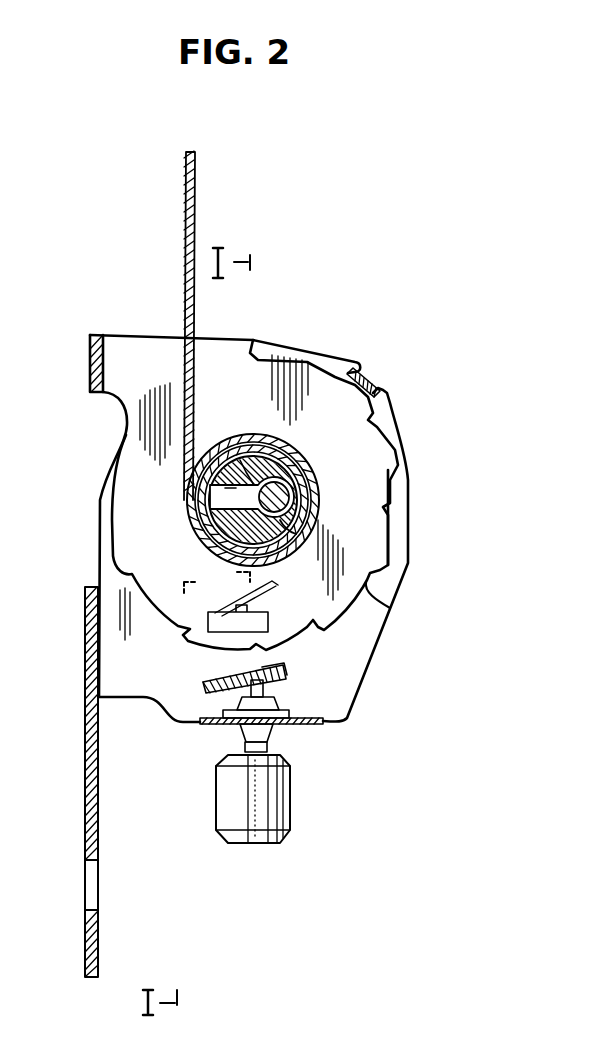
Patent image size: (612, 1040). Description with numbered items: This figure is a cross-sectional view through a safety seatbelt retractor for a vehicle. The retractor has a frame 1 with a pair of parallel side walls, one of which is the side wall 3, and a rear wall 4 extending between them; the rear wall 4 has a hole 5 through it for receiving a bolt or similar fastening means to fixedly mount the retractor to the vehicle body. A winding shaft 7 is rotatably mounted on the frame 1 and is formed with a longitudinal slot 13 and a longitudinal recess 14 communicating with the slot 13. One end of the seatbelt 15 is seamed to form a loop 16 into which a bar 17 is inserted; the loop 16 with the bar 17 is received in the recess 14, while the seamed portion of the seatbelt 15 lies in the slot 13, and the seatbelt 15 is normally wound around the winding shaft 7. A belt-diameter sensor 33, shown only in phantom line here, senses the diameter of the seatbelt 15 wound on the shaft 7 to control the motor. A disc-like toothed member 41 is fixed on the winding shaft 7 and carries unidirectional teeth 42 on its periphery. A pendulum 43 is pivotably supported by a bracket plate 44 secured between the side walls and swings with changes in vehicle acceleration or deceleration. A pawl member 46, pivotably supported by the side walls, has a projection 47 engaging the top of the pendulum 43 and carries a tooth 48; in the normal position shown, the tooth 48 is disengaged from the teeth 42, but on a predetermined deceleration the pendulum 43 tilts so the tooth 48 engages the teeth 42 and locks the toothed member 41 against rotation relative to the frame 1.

The frame 1 is at (82, 721).
The side wall 3 is at (395, 437).
The rear wall 4 is at (90, 786).
The hole 5 is at (90, 868).
The winding shaft 7 is at (228, 490).
The longitudinal slot 13 is at (240, 460).
The longitudinal recess 14 is at (300, 474).
The seatbelt 15 is at (182, 222).
The loop 16 is at (310, 536).
The bar 17 is at (290, 497).
The belt-diameter sensor 33 is at (272, 622).
The toothed member 41 is at (398, 543).
The unidirectional teeth 42 is at (385, 593).
The pendulum 43 is at (292, 806).
The bracket plate 44 is at (318, 727).
The pawl member 46 is at (205, 682).
The projection 47 is at (266, 689).
The tooth 48 is at (288, 670).